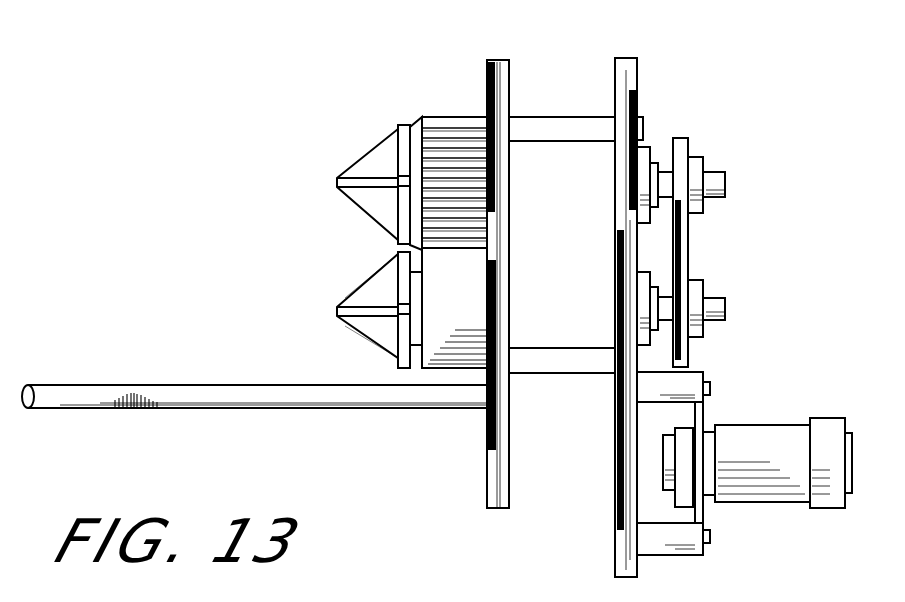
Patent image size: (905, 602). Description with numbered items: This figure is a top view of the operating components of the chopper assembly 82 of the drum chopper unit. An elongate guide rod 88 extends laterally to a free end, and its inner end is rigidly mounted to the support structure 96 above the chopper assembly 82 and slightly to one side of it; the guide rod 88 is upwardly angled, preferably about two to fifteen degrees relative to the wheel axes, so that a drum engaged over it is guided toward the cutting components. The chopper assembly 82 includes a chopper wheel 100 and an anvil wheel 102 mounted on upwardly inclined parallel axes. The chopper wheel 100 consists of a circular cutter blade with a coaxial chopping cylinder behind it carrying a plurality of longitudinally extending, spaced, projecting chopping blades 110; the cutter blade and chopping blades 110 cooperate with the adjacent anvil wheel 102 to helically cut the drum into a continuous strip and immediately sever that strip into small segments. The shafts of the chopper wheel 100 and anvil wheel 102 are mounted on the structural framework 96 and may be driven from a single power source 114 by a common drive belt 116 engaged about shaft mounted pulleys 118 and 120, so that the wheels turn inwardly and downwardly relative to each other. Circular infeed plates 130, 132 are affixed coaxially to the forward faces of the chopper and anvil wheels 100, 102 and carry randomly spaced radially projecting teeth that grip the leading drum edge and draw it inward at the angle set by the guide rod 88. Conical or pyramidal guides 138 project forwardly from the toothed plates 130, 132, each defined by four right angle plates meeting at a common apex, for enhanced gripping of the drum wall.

The chopper assembly 82 is at (287, 230).
The guide rod 88 is at (118, 383).
The support structure 96 is at (502, 485).
The chopper wheel 100 is at (452, 100).
The anvil wheel 102 is at (460, 374).
The chopping blades 110 is at (473, 197).
The power source 114 is at (770, 430).
The drive belt 116 is at (688, 227).
The pulley 118 is at (690, 150).
The pulley 120 is at (688, 270).
The circular plate 130 is at (393, 157).
The circular plate 132 is at (395, 283).
The guides 138 is at (358, 332).